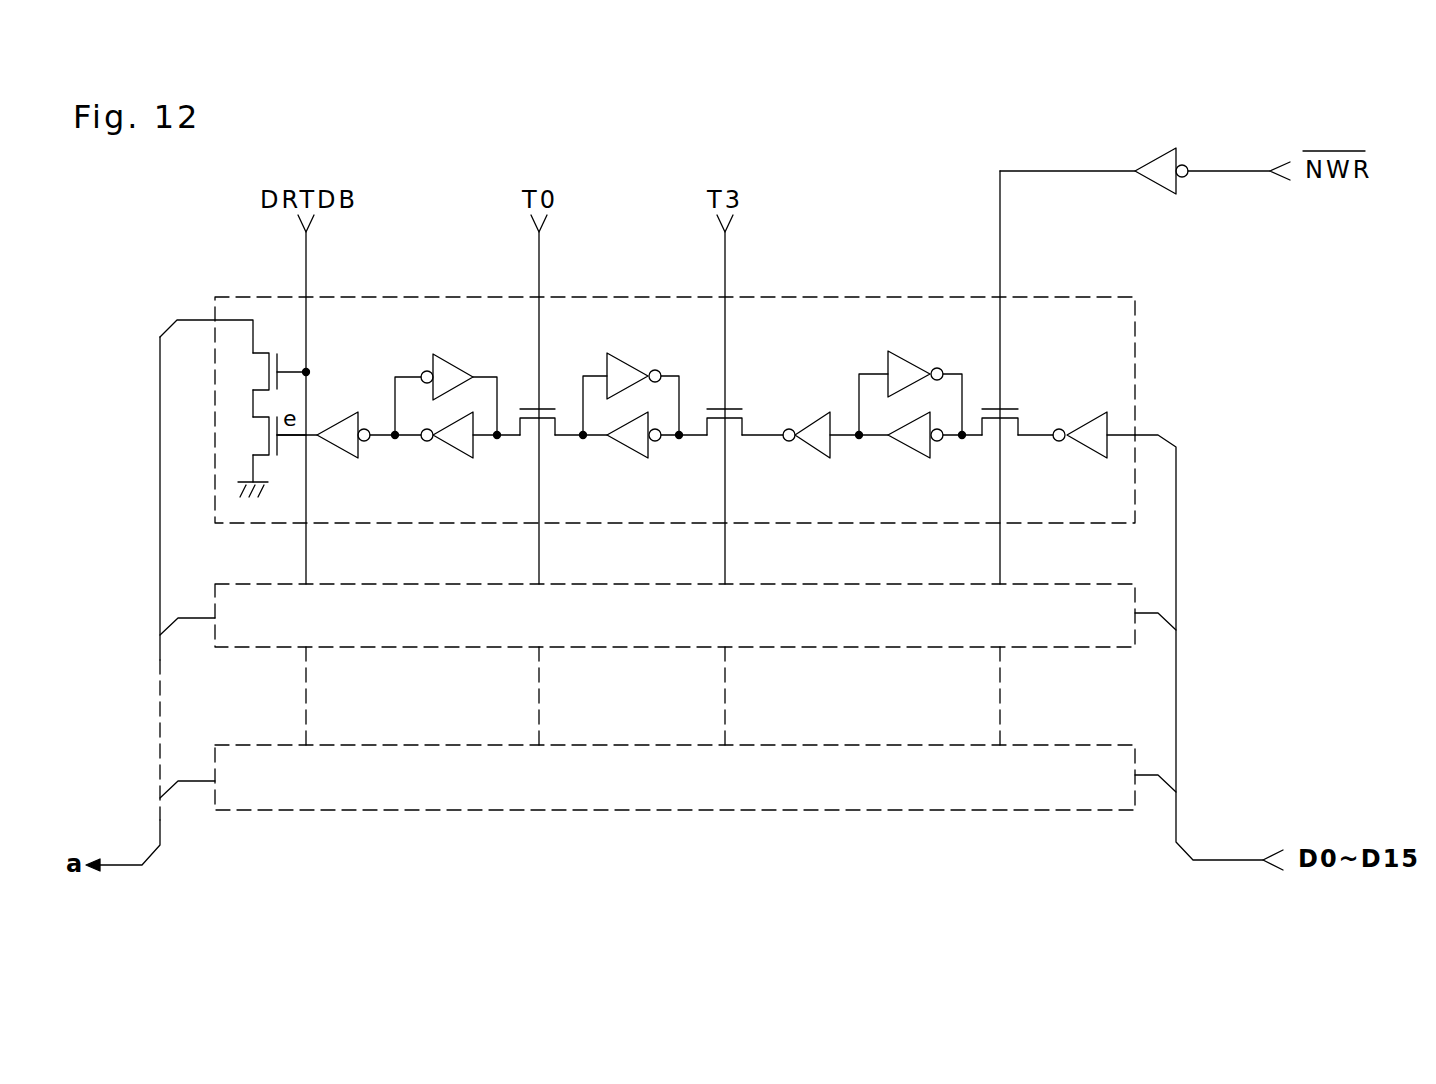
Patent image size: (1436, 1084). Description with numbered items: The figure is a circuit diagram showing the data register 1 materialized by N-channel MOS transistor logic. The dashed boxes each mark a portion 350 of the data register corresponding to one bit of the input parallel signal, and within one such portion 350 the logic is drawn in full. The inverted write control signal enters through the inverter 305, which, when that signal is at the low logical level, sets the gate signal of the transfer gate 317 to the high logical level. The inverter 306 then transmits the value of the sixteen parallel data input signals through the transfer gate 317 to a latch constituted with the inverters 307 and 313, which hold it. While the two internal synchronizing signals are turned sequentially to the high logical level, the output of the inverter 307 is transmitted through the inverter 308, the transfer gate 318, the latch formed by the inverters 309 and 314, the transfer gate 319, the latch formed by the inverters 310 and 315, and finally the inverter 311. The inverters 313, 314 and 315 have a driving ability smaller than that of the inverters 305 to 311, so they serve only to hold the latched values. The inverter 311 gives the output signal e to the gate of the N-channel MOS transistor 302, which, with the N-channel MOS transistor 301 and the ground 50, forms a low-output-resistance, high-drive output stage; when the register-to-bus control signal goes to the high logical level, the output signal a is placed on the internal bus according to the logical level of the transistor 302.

The data register 1 is at (1365, 521).
The ground 50 is at (234, 505).
The N-channel-type MOS transistor 301 is at (257, 373).
The N-channel-type MOS transistor 302 is at (257, 437).
The inverter 305 is at (1177, 193).
The inverter 306 is at (1070, 442).
The inverter 307 is at (912, 447).
The inverter 308 is at (805, 447).
The inverter 309 is at (633, 447).
The inverter 310 is at (457, 447).
The inverter 311 is at (338, 450).
The inverter 313 is at (912, 352).
The inverter 314 is at (633, 351).
The inverter 315 is at (450, 354).
The transfer gate 317 is at (1005, 408).
The transfer gate 318 is at (728, 407).
The transfer gate 319 is at (543, 404).
The portion of the data register corresponding to one bit 350 is at (1135, 327).